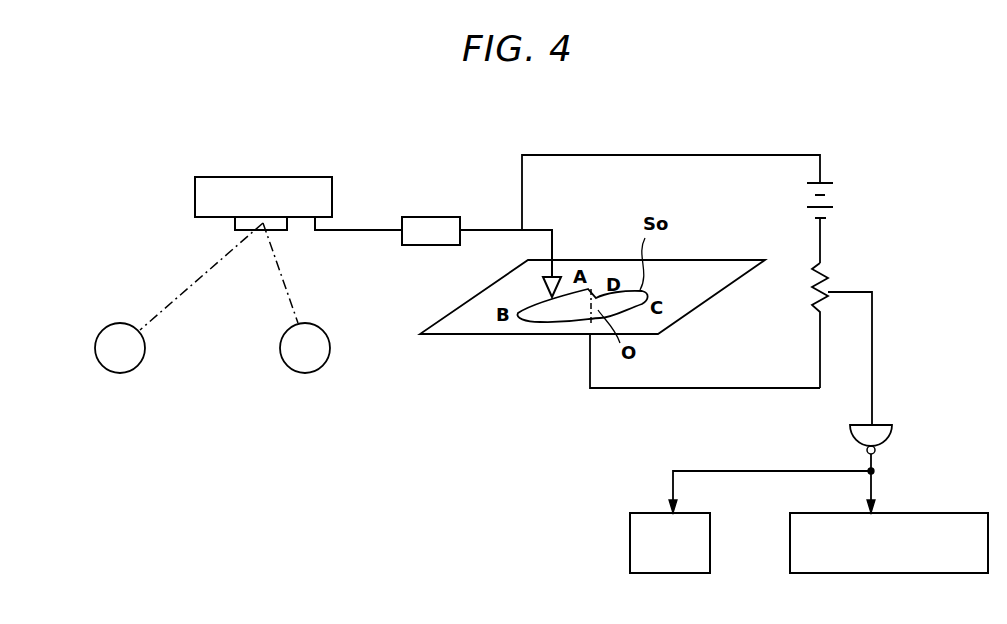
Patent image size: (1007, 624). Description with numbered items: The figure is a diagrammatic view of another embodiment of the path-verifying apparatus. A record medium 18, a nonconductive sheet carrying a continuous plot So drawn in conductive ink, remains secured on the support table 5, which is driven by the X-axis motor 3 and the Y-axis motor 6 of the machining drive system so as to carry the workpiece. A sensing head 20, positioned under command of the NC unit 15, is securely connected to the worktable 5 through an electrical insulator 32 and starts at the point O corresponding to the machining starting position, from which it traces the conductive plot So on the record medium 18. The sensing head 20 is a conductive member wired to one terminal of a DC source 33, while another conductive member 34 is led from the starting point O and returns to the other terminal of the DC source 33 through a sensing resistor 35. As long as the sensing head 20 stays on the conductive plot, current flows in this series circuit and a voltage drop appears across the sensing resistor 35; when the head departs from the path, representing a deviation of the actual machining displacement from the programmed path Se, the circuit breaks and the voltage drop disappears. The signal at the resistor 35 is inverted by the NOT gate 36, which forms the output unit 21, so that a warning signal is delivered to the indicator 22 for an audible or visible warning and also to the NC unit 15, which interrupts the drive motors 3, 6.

The X-axis motor 3 is at (138, 362).
The support table 5 is at (195, 201).
The Y-axis motor 6 is at (283, 362).
The NC unit 15 is at (640, 513).
The record medium 18 is at (722, 268).
The sensing head 20 is at (553, 241).
The output unit 21 is at (921, 229).
The indicator 22 is at (930, 513).
The electrical insulator 32 is at (433, 216).
The DC source 33 is at (836, 201).
The conductive member 34 is at (590, 358).
The sensing resistor 35 is at (825, 273).
The NOT gate 36 is at (892, 432).